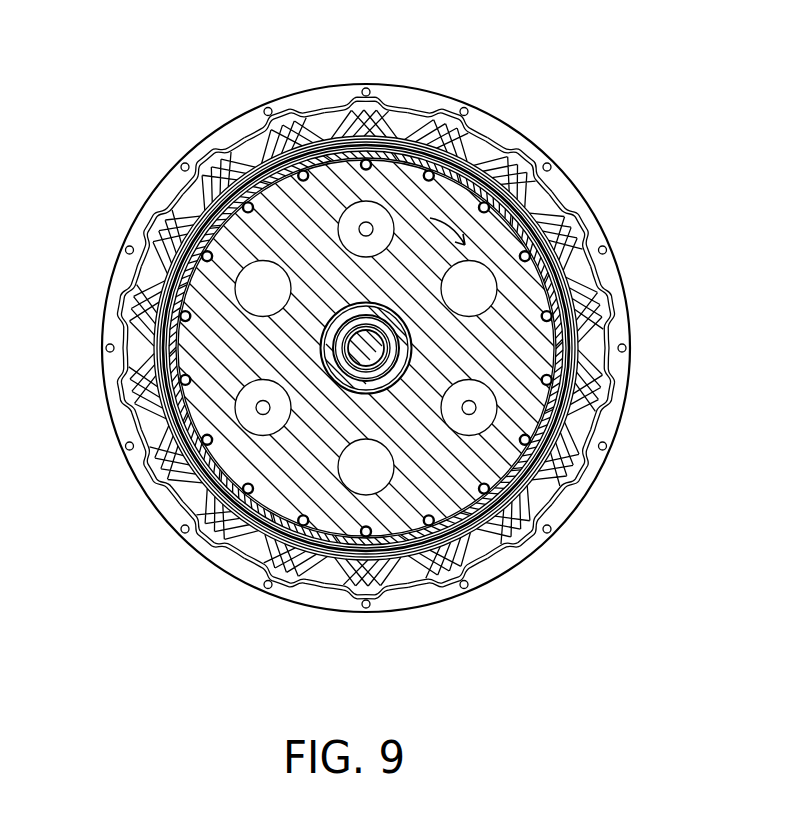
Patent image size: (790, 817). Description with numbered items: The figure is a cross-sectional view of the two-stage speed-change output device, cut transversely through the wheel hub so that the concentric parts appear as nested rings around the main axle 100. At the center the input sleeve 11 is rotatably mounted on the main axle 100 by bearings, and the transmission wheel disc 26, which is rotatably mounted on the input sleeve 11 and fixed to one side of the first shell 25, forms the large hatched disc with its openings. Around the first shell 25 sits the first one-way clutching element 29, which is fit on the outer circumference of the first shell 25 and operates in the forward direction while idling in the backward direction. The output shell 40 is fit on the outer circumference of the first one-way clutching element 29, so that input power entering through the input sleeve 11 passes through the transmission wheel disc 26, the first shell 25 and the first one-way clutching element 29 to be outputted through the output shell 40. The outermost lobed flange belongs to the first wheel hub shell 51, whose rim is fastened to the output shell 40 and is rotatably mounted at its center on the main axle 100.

The input sleeve 11 is at (332, 356).
The first shell 25 is at (281, 170).
The transmission wheel disc 26 is at (443, 208).
The first one-way clutching element 29 is at (568, 322).
The output shell 40 is at (341, 128).
The first wheel hub shell 51 is at (417, 113).
The main axle 100 is at (392, 342).